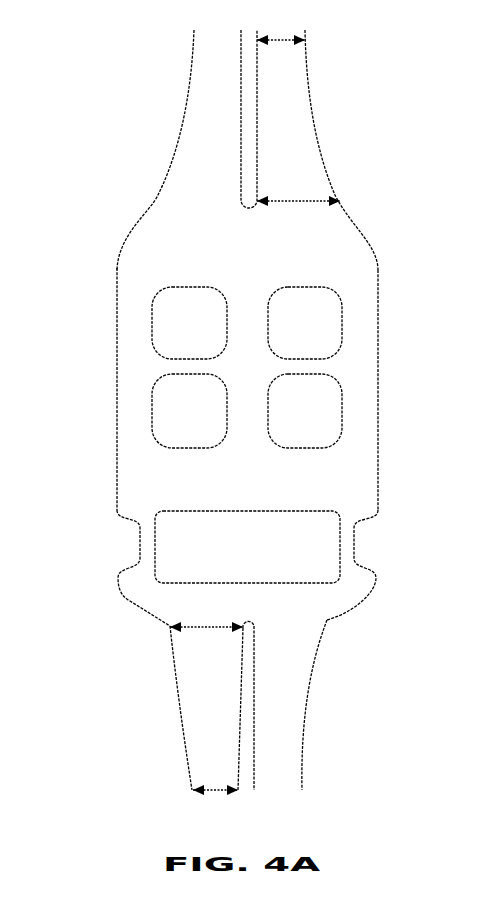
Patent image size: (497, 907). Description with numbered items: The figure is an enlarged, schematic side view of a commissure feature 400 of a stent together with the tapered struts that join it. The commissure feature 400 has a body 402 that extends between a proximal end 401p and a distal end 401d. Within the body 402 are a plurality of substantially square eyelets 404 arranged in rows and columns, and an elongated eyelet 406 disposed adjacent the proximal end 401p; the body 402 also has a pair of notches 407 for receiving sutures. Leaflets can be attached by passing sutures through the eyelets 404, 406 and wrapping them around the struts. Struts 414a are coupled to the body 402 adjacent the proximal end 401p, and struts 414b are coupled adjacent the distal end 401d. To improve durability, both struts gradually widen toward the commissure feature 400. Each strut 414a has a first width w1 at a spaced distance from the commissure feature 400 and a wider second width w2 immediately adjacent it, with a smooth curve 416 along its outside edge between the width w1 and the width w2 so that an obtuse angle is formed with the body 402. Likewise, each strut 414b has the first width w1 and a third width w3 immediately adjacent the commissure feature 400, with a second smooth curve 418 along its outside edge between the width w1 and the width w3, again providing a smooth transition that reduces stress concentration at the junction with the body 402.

The commissure feature 400 is at (398, 345).
The distal end 401d is at (158, 146).
The proximal end 401p is at (372, 652).
The body 402 is at (348, 455).
The substantially square eyelets 404 is at (320, 298).
The elongated eyelet 406 is at (310, 529).
The notches 407 is at (140, 546).
The struts 414a is at (280, 698).
The struts 414b is at (280, 92).
The smooth curve 416 is at (183, 690).
The second smooth curve 418 is at (197, 97).
The first width w1 is at (283, 40).
The second width w2 is at (215, 630).
The third width w3 is at (313, 197).